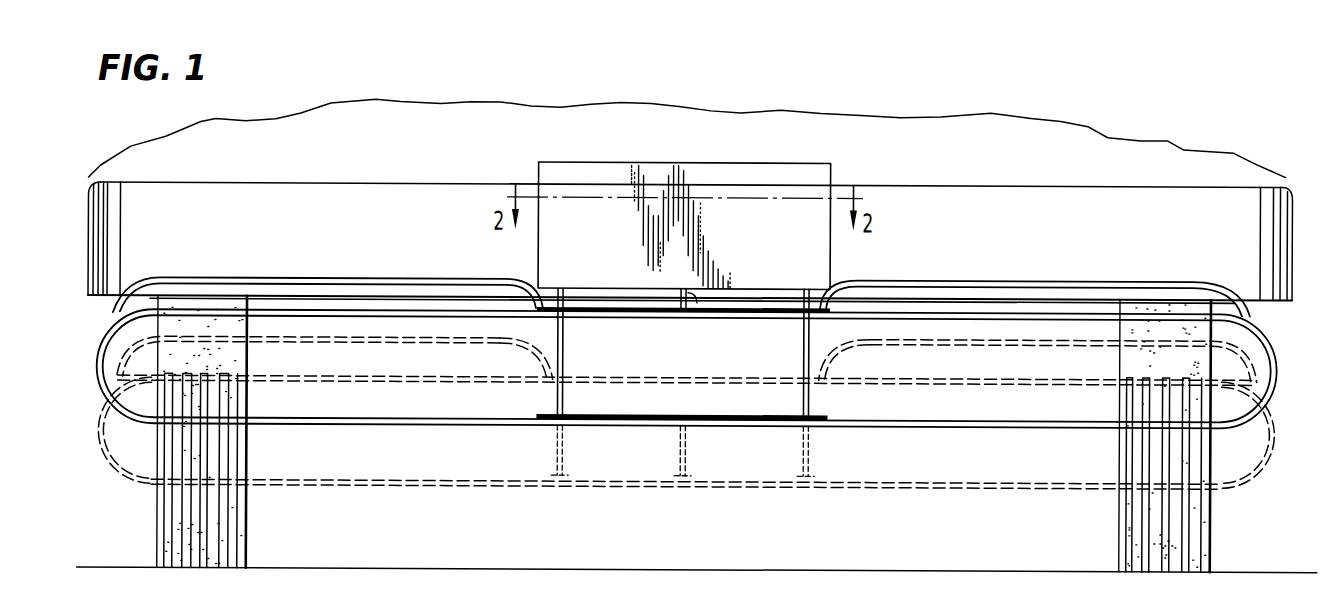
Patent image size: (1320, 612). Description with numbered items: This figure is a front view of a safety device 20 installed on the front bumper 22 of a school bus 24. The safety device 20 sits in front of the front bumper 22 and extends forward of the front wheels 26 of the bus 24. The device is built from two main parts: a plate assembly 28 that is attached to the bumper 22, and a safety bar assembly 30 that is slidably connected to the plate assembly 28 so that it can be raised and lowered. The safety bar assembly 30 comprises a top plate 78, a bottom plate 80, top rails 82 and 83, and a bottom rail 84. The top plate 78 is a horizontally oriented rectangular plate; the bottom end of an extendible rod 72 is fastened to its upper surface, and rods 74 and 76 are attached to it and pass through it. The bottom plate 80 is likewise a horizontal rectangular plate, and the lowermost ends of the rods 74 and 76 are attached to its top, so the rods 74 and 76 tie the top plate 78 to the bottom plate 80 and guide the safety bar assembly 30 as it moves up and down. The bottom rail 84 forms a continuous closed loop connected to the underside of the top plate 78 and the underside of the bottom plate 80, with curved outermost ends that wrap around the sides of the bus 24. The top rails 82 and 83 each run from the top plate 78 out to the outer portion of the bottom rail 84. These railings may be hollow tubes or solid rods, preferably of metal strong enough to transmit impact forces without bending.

The safety device 20 is at (519, 262).
The front bumper 22 is at (404, 193).
The school bus 24 is at (758, 117).
The front wheels 26 is at (248, 524).
The plate assembly 28 is at (700, 148).
The safety bar assembly 30 is at (1057, 260).
The extendible rod 72 is at (688, 290).
The rod 74 is at (564, 347).
The rod 76 is at (803, 347).
The top plate 78 is at (612, 307).
The bottom plate 80 is at (641, 412).
The top rail 82 is at (316, 277).
The top rail 83 is at (950, 276).
The bottom rail 84 is at (916, 426).